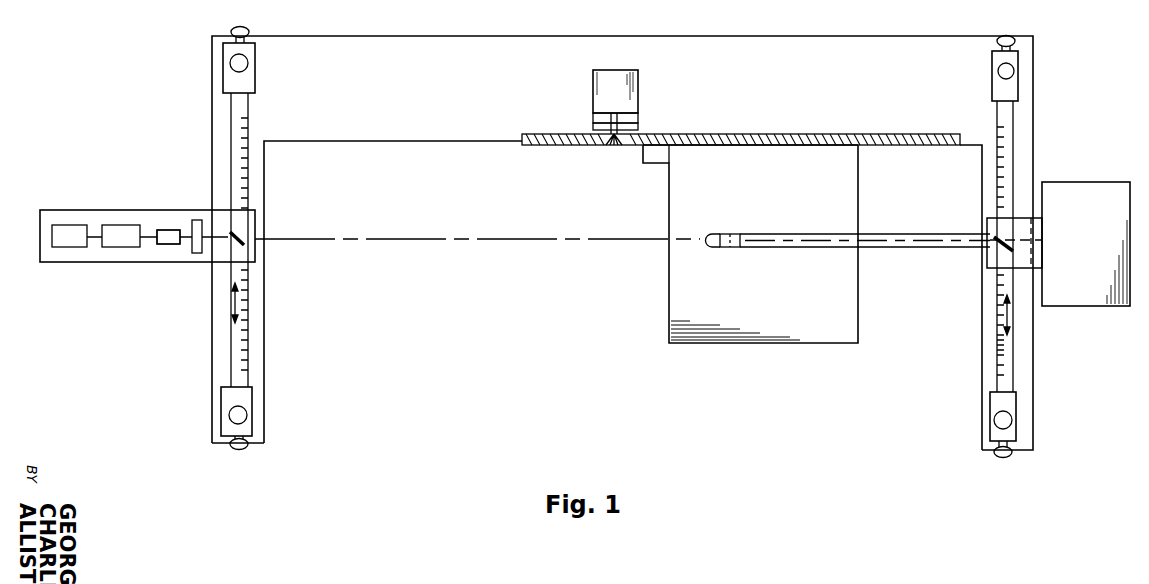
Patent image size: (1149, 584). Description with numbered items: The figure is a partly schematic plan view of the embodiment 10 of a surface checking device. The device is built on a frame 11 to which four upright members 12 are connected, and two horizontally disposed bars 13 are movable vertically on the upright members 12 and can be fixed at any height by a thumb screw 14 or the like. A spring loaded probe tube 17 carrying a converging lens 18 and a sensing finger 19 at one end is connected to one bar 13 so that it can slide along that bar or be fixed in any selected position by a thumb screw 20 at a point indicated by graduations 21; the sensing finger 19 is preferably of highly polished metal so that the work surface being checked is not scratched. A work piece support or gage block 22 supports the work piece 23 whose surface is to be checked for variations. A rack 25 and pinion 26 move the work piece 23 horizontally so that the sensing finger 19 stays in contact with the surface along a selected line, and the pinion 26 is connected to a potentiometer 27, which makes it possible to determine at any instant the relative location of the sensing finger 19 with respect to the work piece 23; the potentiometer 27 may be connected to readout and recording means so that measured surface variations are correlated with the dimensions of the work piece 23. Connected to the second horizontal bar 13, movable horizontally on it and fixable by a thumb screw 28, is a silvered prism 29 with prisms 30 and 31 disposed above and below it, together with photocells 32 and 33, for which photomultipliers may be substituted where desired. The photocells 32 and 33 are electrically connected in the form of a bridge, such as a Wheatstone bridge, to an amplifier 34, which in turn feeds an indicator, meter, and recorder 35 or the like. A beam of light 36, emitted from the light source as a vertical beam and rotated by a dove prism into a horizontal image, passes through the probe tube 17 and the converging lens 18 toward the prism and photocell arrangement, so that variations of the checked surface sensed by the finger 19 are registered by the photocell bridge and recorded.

The embodiment 10 is at (409, 141).
The frame 11 is at (338, 126).
The upright members 12 is at (248, 63).
The horizontally disposed bars 13 is at (236, 348).
The thumb screw 14 is at (241, 450).
The probe tube 17 is at (901, 246).
The converging lens 18 is at (728, 235).
The sensing finger 19 is at (712, 236).
The thumb screw 20 is at (1000, 240).
The graduations 21 is at (1000, 358).
The work piece support or gage block 22 is at (773, 262).
The work piece 23 is at (810, 320).
The rack 25 is at (810, 133).
The pinion 26 is at (618, 141).
The potentiometer 27 is at (615, 80).
The thumb screw 28 is at (246, 233).
The silvered prism 29 is at (176, 197).
The prism 30 is at (197, 236).
The prism 31 is at (198, 222).
The photocell 32 is at (165, 229).
The photocell 33 is at (168, 246).
The amplifier 34 is at (112, 248).
The indicator, meter, and recorder 35 is at (60, 248).
The beam of light 36 is at (440, 240).